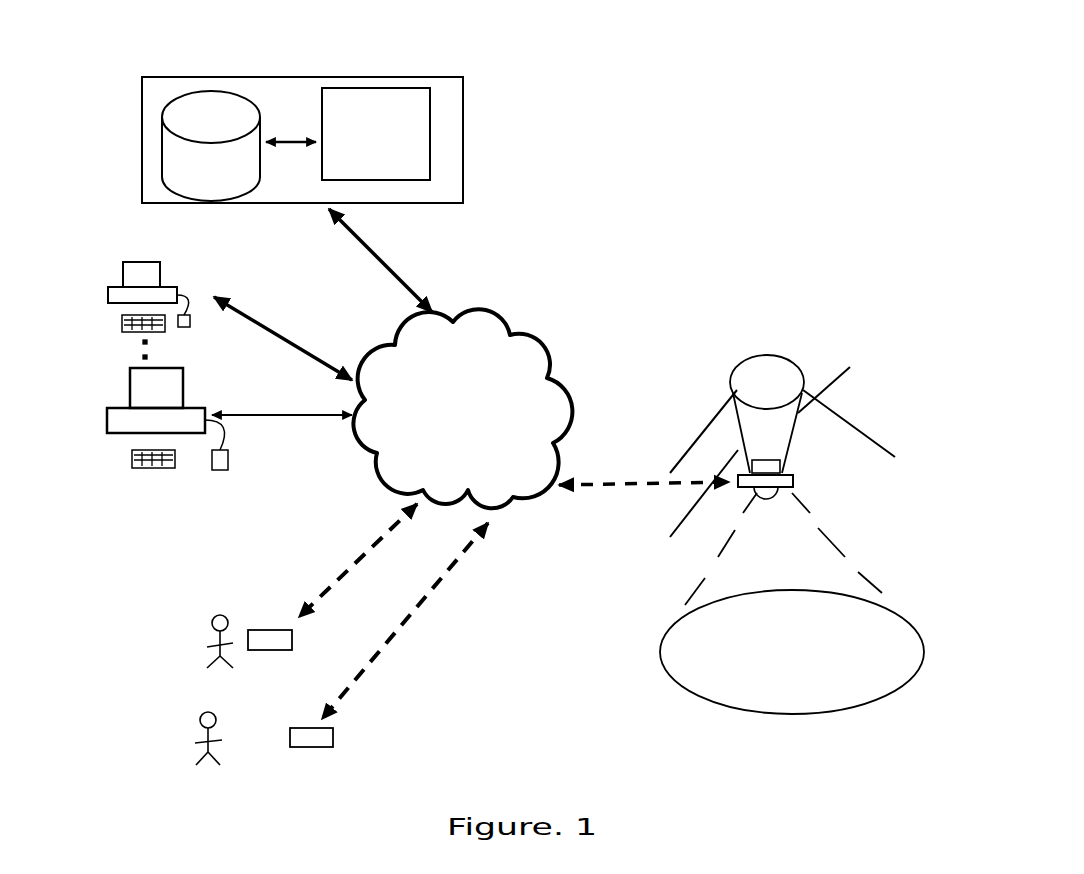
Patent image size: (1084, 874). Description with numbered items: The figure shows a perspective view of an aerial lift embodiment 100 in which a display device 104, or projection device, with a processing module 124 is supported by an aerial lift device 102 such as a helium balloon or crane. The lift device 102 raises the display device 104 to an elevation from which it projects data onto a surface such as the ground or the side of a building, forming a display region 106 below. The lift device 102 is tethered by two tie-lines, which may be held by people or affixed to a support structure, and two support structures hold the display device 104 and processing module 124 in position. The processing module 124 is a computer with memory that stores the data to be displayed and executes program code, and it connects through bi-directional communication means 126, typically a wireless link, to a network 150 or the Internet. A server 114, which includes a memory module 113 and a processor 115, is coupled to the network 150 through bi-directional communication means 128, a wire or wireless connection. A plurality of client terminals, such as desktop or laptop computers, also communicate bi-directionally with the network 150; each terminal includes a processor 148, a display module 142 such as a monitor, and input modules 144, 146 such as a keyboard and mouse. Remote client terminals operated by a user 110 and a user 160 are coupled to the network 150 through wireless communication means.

The aerial lift embodiment 100 is at (708, 88).
The aerial lift device 102 is at (798, 410).
The display device 104 is at (795, 476).
The display region 106 is at (810, 723).
The user 110 is at (228, 609).
The memory module 113 is at (211, 146).
The server 114 is at (335, 74).
The processor 115 is at (348, 134).
The processing module 124 is at (781, 458).
The bi-directional communication means 126 is at (663, 492).
The bi-directional communication means 128 is at (383, 260).
The display module 142 is at (130, 395).
The input module 144 is at (146, 469).
The input module 146 is at (228, 463).
The processor 148 is at (108, 434).
The network 150 is at (462, 408).
The user 160 is at (195, 726).